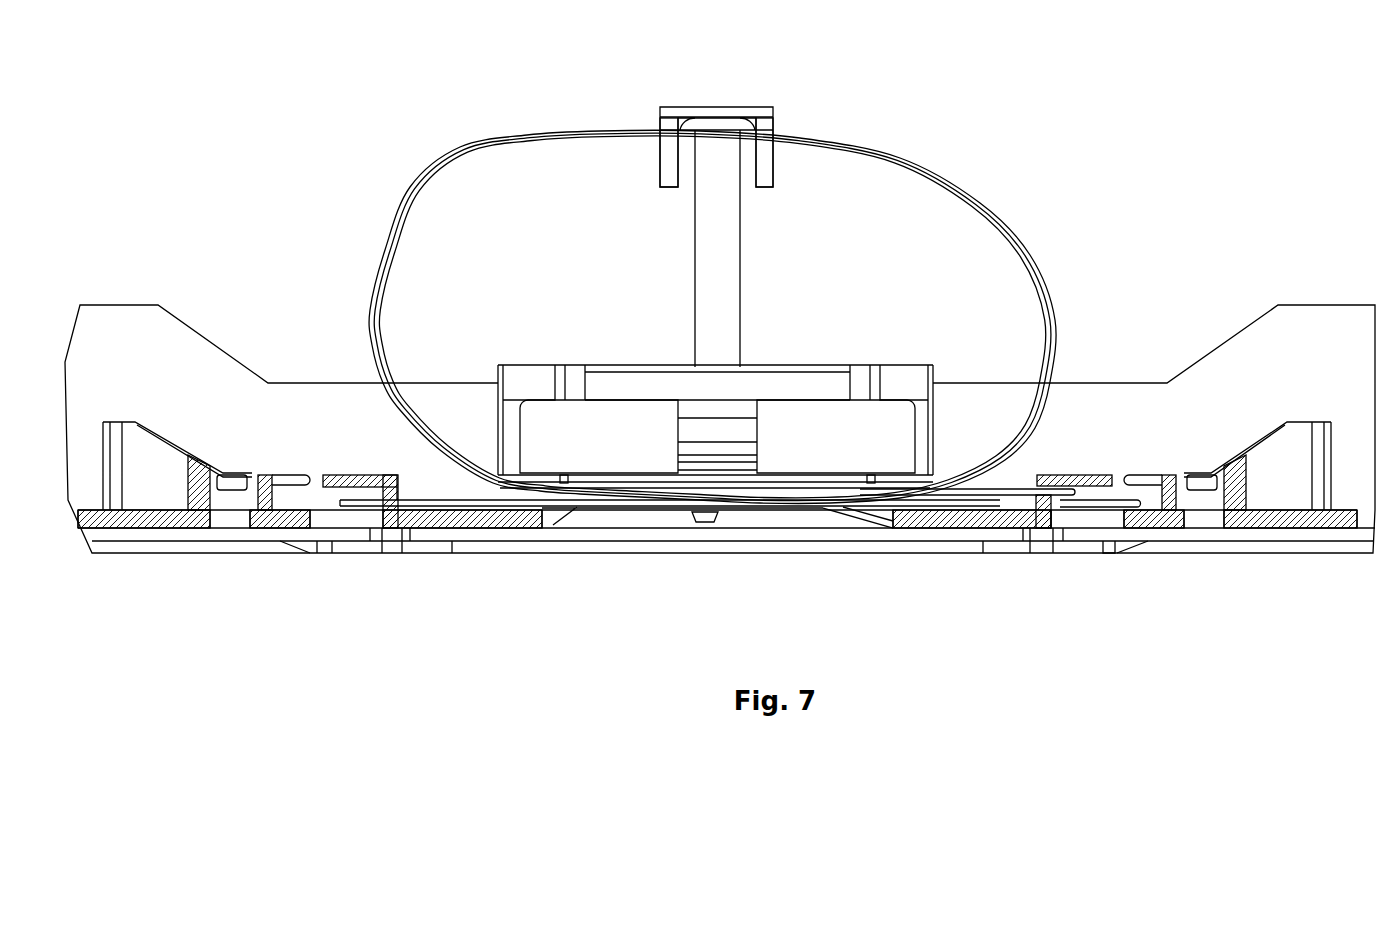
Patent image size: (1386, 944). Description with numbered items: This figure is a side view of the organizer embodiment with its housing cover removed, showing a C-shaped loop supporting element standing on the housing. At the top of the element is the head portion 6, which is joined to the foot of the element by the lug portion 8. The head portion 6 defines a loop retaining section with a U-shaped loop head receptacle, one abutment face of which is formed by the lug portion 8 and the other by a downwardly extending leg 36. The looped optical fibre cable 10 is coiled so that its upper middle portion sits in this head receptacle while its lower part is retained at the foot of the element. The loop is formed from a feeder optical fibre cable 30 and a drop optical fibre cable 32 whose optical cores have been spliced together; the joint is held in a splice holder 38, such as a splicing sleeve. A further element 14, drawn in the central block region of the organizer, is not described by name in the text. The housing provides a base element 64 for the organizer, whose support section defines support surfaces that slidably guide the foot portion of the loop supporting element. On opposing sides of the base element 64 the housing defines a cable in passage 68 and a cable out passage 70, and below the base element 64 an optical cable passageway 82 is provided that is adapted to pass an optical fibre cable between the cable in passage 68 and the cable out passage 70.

The head portion 6 is at (688, 104).
The lug portion 8 is at (715, 261).
The looped optical fibre cable 10 is at (955, 171).
The housing block 14 is at (623, 457).
The feeder optical fibre cable 30 is at (518, 508).
The drop optical fibre cable 32 is at (1002, 495).
The downwardly extending leg 36 is at (670, 119).
The splice holder 38 is at (732, 406).
The base element 64 is at (725, 470).
The cable in passage 68 is at (430, 508).
The cable out passage 70 is at (1045, 496).
The optical cable passageway 82 is at (841, 506).